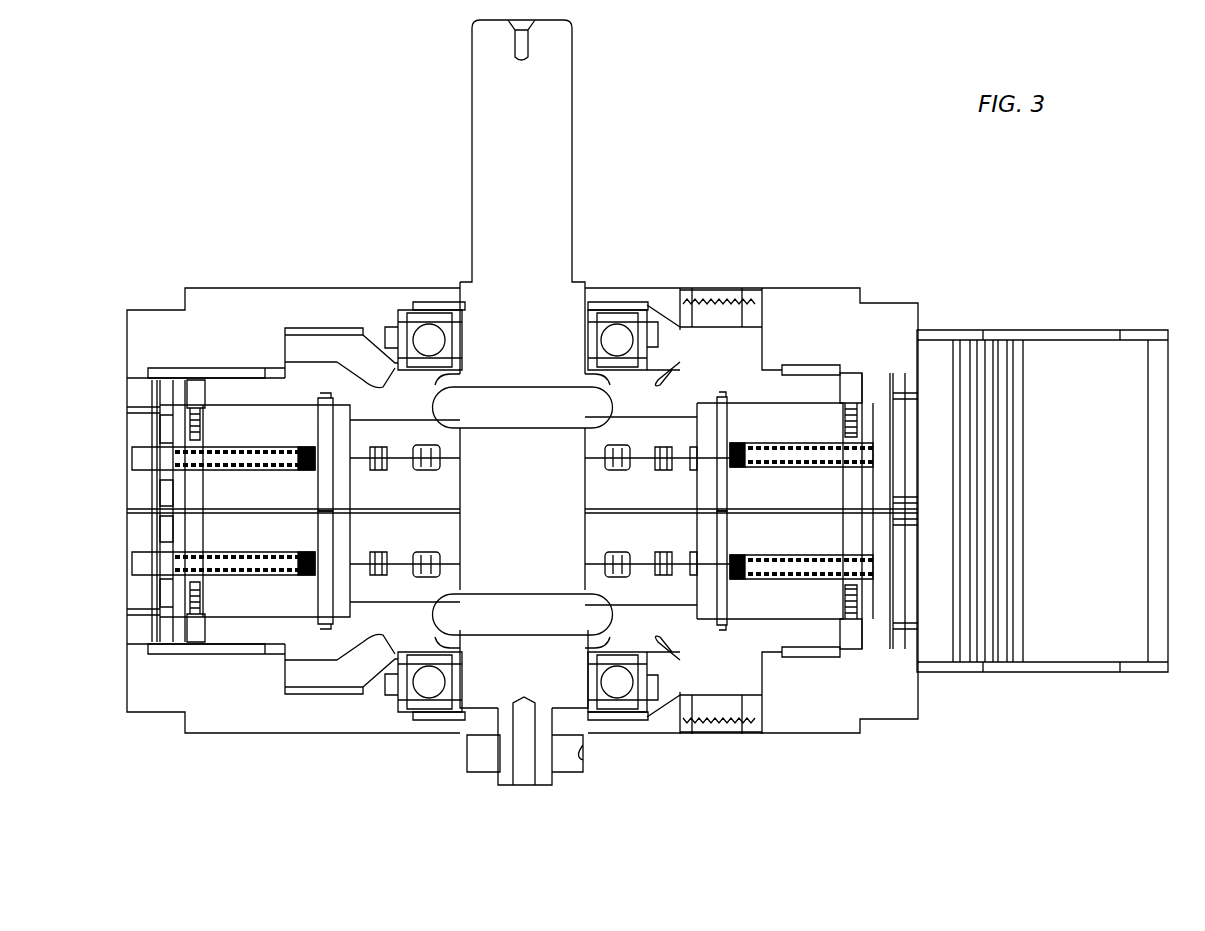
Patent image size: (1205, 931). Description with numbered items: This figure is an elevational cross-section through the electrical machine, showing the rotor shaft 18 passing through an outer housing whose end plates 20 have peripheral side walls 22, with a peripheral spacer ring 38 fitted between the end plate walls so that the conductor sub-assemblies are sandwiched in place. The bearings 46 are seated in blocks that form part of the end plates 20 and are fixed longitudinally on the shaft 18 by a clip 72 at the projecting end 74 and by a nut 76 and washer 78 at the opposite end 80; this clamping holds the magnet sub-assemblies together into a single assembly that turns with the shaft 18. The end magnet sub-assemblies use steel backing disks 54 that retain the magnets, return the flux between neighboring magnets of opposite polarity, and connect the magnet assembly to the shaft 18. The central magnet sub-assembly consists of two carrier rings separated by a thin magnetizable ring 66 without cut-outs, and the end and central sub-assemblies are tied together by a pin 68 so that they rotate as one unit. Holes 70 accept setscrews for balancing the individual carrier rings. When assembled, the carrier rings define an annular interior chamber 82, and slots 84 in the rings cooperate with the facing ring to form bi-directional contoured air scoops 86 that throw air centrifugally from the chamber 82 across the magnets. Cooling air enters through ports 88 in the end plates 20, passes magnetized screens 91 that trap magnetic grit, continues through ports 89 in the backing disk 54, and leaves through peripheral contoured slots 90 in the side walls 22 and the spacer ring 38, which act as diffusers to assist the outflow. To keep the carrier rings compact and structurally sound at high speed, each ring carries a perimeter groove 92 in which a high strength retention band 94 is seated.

The rotor shaft 18 is at (572, 175).
The end plate 20 is at (838, 283).
The peripheral side wall 22 is at (918, 638).
The peripheral spacer ring 38 is at (918, 528).
The bearings 46 is at (645, 305).
The backing disk 54 is at (300, 658).
The magnetizable ring 66 is at (230, 510).
The pin 68 is at (718, 392).
The setscrew holes 70 is at (203, 603).
The clip 72 is at (590, 300).
The projecting end 74 is at (572, 70).
The nut 76 is at (582, 767).
The washer 78 is at (580, 735).
The opposite end 80 is at (550, 785).
The annular interior chamber 82 is at (612, 525).
The slots 84 is at (617, 547).
The air scoops 86 is at (630, 573).
The ports 88 is at (762, 290).
The ports 89 is at (369, 645).
The peripheral contoured slots 90 is at (917, 393).
The magnetized screens 91 is at (720, 300).
The perimeter groove 92 is at (167, 607).
The high strength band 94 is at (160, 590).